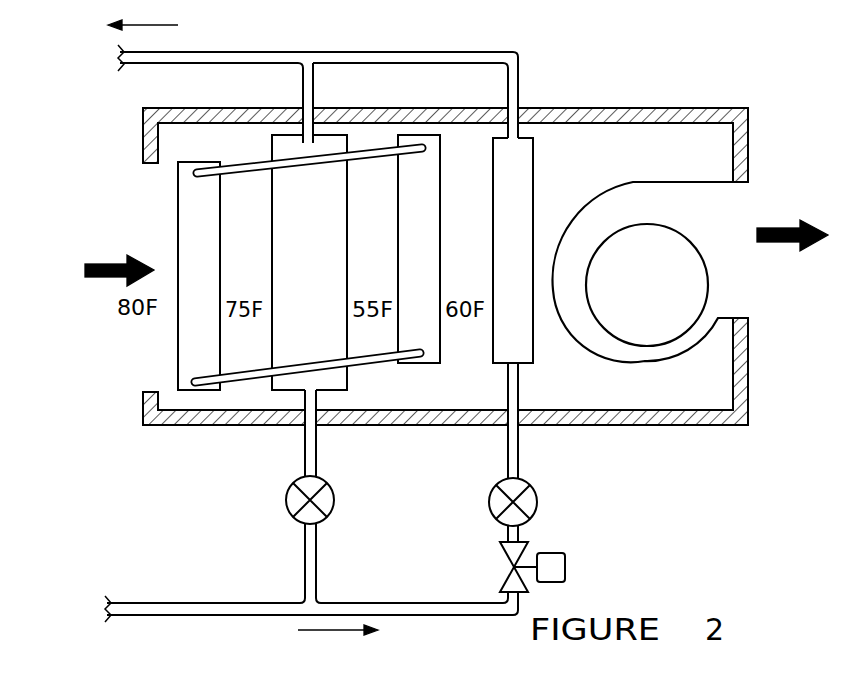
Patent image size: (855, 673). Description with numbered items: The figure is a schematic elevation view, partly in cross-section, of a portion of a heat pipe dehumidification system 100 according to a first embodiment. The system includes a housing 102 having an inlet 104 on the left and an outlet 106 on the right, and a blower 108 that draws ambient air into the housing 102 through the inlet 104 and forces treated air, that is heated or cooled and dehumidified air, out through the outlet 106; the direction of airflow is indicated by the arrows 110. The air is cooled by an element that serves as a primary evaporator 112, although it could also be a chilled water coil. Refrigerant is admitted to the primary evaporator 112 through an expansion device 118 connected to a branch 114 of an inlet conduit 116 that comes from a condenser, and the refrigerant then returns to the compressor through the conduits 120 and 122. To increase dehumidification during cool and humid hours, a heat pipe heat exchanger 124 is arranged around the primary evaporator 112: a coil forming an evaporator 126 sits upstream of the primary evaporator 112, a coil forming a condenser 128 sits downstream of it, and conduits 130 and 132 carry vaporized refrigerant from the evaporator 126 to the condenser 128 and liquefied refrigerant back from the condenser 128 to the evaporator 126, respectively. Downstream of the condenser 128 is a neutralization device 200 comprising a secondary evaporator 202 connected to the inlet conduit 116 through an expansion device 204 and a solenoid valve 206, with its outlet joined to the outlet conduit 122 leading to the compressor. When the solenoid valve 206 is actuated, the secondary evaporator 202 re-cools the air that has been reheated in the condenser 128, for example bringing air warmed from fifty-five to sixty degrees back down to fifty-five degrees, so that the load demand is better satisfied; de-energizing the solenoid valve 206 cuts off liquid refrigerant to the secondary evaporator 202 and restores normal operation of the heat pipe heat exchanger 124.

The heat pipe dehumidification system 100 is at (118, 450).
The housing 102 is at (745, 384).
The inlet 104 is at (146, 160).
The outlet 106 is at (742, 318).
The blower 108 is at (640, 360).
The arrows 110 is at (97, 278).
The primary evaporator 112 is at (312, 245).
The branch 114 is at (318, 553).
The inlet conduit 116 is at (264, 603).
The expansion device 118 is at (287, 494).
The conduit 120 is at (313, 92).
The outlet conduit 122 is at (243, 68).
The heat pipe heat exchanger 124 is at (267, 260).
The evaporator 126 is at (214, 245).
The condenser 128 is at (432, 233).
The conduit 130 is at (252, 164).
The conduit 132 is at (332, 361).
The neutralization device 200 is at (550, 365).
The secondary evaporator 202 is at (532, 247).
The expansion device 204 is at (493, 492).
The solenoid valve 206 is at (501, 566).